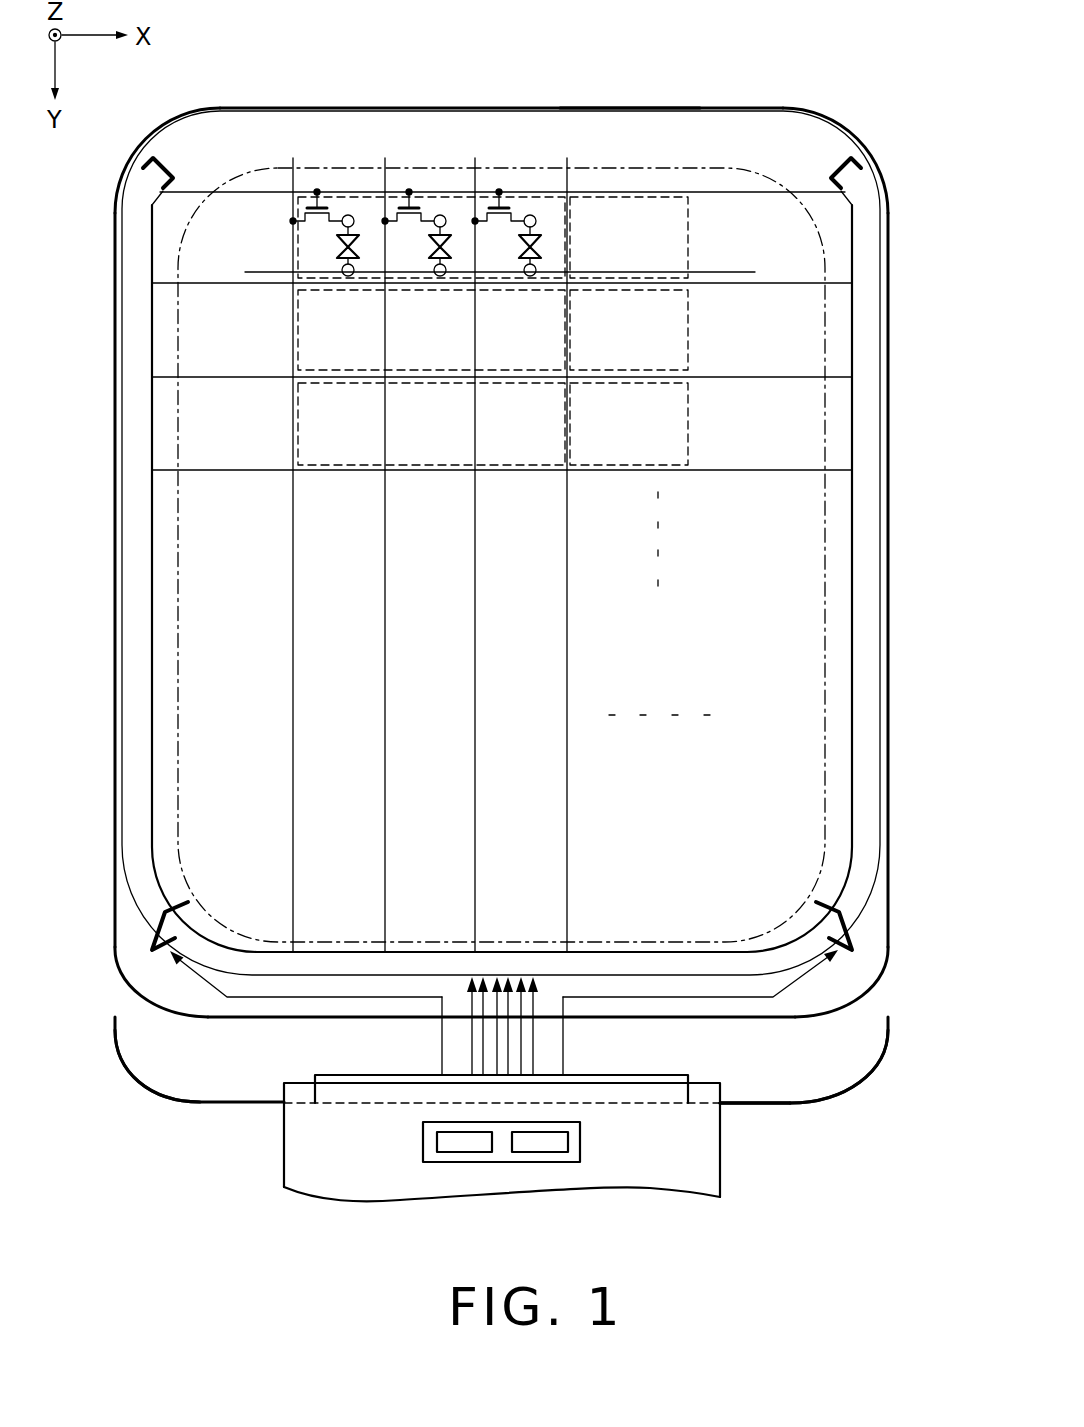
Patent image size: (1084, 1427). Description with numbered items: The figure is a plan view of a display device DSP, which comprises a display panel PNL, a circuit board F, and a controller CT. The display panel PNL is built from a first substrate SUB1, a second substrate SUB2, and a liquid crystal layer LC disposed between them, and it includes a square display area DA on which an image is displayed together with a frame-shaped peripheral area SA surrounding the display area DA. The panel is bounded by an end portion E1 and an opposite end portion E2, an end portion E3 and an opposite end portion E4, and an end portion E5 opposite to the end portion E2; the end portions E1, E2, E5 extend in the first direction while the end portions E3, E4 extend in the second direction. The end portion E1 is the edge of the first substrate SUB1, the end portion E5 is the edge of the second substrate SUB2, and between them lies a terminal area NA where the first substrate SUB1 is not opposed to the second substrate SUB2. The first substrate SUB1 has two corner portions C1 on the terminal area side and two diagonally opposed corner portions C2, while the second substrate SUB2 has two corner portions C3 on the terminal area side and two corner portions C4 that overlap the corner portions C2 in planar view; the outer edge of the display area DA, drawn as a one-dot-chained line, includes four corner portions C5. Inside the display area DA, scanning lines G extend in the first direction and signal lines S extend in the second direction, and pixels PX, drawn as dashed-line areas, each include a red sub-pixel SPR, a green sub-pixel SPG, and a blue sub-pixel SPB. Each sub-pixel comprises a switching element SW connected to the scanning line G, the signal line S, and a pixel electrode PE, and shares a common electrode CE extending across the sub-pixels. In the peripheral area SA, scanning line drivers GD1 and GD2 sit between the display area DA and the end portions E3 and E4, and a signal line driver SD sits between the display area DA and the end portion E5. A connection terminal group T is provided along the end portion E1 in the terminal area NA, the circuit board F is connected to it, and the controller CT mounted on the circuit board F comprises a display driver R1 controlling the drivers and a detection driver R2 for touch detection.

The display device DSP is at (766, 86).
The display panel PNL is at (501, 666).
The first substrate SUB1 is at (125, 1170).
The second substrate SUB2 is at (203, 1017).
The display area DA is at (698, 176).
The terminal area NA is at (800, 1105).
The peripheral area SA is at (624, 120).
The pixel PX is at (532, 62).
The red sub-pixel SPR is at (346, 170).
The green sub-pixel SPG is at (434, 170).
The blue sub-pixel SPB is at (547, 196).
The switching element SW is at (497, 226).
The pixel electrode PE is at (537, 221).
The common electrode CE is at (530, 278).
The liquid crystal layer LC is at (542, 247).
The scanning line G is at (713, 193).
The signal line S is at (292, 649).
The scanning line driver GD1 is at (135, 620).
The scanning line driver GD2 is at (872, 620).
The signal line driver SD is at (646, 958).
The connection terminal group T is at (644, 1075).
The circuit board F is at (633, 1197).
The controller CT is at (501, 1184).
The display driver R1 is at (455, 1152).
The detection driver R2 is at (547, 1152).
The end portion E1 is at (752, 1105).
The end portion E2 is at (275, 108).
The end portion E3 is at (116, 775).
The end portion E4 is at (889, 775).
The end portion E5 is at (797, 1112).
The first corner portion C1 is at (145, 1075).
The second corner portion C2 is at (158, 128).
The third corner portion C3 is at (162, 1012).
The fourth corner portion C4 is at (872, 116).
The fifth corner portion C5 is at (196, 207).